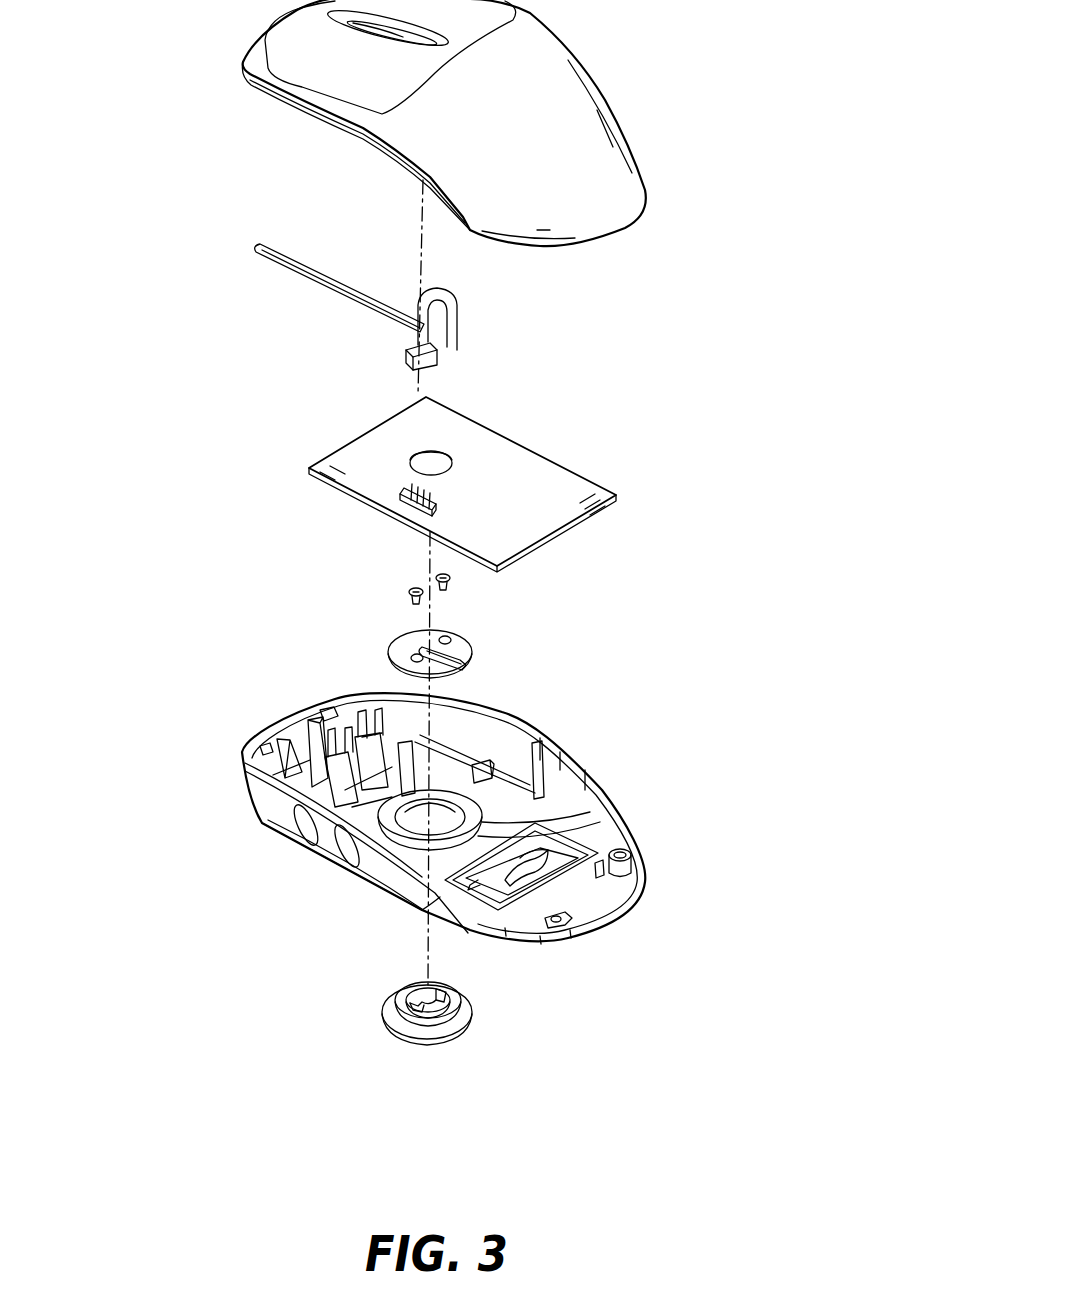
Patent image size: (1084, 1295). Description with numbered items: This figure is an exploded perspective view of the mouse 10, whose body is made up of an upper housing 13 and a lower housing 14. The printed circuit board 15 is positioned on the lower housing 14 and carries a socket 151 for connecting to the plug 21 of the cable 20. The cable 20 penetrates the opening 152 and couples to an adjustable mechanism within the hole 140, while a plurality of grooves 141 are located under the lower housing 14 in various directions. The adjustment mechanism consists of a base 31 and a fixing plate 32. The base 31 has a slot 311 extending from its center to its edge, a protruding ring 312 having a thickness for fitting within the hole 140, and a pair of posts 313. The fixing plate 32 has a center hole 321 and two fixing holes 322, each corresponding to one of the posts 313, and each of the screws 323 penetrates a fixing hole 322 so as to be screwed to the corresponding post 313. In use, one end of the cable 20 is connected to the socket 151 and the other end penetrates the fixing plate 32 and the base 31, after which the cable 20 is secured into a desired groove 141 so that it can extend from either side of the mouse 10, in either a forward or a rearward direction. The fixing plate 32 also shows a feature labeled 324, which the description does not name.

The mouse 10 is at (667, 353).
The upper housing 13 is at (562, 54).
The lower housing 14 is at (580, 776).
The hole 140 is at (445, 807).
The grooves 141 is at (448, 807).
The printed circuit board 15 is at (545, 470).
The socket 151 is at (408, 505).
The opening 152 is at (460, 455).
The cable 20 is at (340, 298).
The plug 21 is at (430, 353).
The base 31 is at (450, 1032).
The slot 311 is at (440, 1007).
The protruding ring 312 is at (460, 1015).
The posts 313 is at (445, 990).
The fixing plate 32 is at (462, 652).
The center hole 321 is at (410, 650).
The fixing holes 322 is at (445, 637).
The screws 323 is at (405, 590).
The slot 324 is at (462, 665).